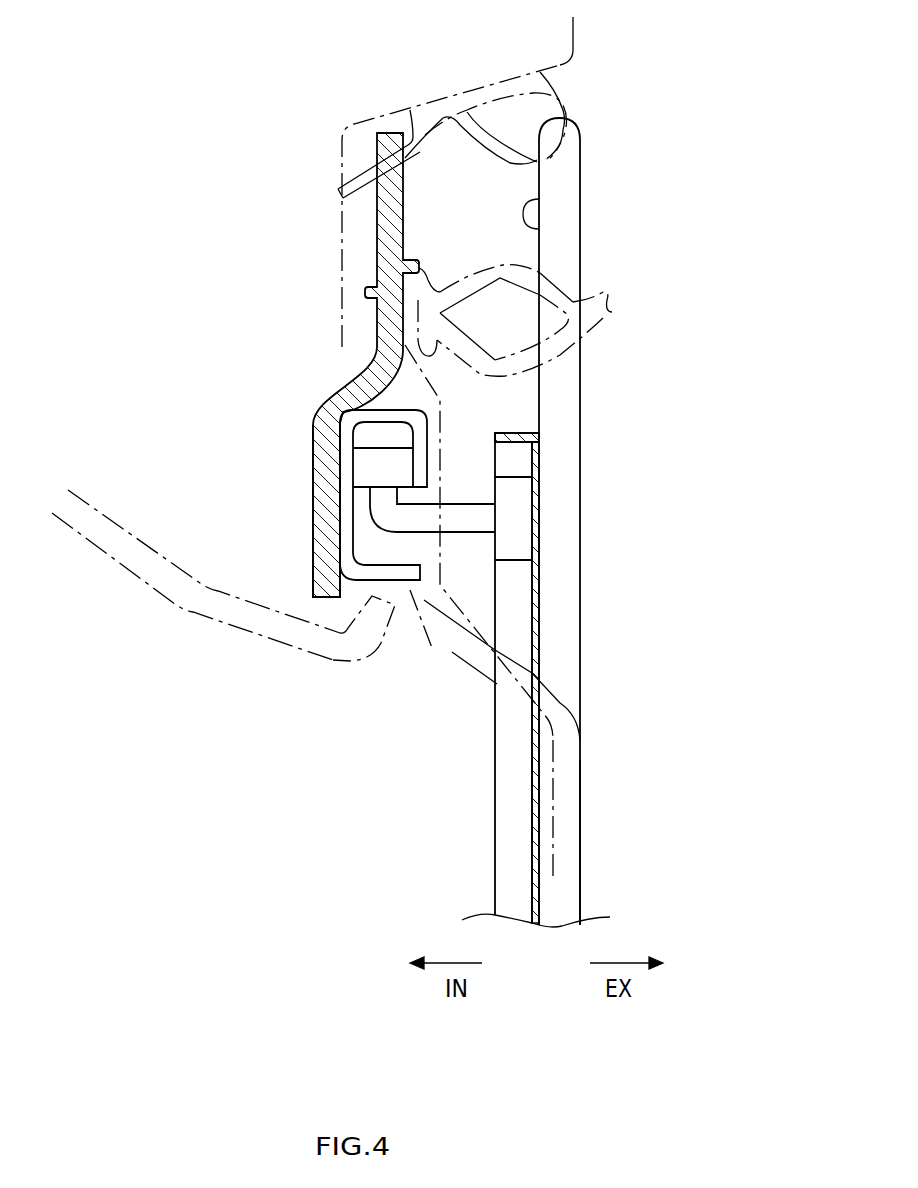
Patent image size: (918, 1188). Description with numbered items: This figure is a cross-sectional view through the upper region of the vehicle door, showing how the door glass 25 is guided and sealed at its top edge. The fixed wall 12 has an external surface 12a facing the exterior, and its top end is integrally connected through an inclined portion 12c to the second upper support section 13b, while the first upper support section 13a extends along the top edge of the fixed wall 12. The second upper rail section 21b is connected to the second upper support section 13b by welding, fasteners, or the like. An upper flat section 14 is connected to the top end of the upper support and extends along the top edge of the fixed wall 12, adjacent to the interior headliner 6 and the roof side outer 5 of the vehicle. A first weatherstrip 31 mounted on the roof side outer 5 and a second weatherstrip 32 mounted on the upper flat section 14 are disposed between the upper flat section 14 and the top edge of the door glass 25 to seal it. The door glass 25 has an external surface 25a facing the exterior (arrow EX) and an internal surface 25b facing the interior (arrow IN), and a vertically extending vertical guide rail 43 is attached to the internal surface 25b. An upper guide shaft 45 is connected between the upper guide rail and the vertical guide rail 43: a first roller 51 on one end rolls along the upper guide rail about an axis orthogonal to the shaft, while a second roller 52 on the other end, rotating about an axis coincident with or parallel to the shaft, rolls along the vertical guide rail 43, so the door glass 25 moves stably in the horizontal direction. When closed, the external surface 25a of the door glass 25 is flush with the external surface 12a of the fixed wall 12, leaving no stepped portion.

The roof side outer 5 is at (575, 52).
The interior headliner 6 is at (116, 558).
The fixed wall 12 is at (567, 708).
The external surface of the fixed wall 12a is at (535, 841).
The inclined portion 12c is at (482, 677).
The first upper support section 13a is at (440, 467).
The second upper support section 13b is at (327, 520).
The upper flat section 14 is at (377, 240).
The second upper rail section 21b is at (363, 570).
The door glass 25 is at (563, 613).
The external surface of the door glass 25a is at (638, 842).
The internal surface of the door glass 25b is at (532, 204).
The first weatherstrip 31 is at (565, 98).
The second weatherstrip 32 is at (612, 312).
The vertical guide rail 43 is at (513, 427).
The upper guide shaft 45 is at (467, 515).
The first roller 51 is at (367, 465).
The second roller 52 is at (517, 520).